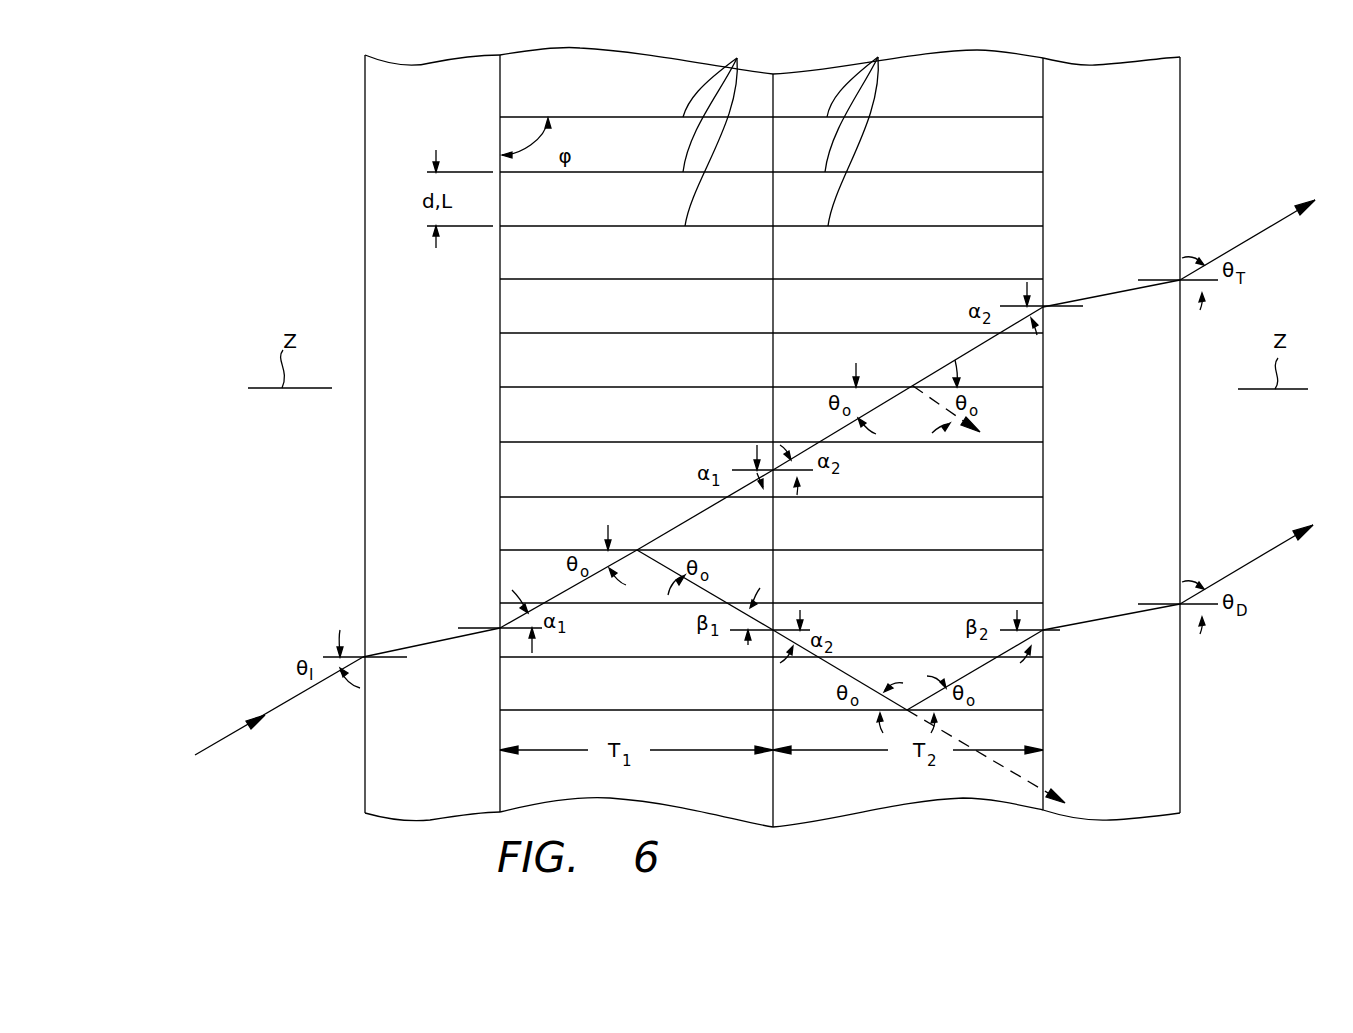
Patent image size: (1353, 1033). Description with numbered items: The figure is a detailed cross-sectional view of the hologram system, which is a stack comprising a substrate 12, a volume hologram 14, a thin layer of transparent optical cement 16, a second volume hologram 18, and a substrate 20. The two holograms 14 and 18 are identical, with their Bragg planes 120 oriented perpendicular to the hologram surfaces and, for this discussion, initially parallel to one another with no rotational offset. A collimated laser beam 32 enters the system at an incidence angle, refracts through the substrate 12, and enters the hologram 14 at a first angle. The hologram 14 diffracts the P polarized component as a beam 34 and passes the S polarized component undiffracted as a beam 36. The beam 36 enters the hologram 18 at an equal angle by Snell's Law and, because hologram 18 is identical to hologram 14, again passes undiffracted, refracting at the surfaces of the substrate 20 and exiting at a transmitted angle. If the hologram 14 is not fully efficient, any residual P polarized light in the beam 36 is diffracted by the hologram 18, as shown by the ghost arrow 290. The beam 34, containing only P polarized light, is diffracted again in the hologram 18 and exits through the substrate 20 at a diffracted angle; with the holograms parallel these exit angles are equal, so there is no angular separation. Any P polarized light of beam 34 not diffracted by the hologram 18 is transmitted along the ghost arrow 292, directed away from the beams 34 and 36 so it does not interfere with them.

The substrate 12 is at (397, 62).
The volume hologram 14 is at (615, 53).
The thin layer of transparent optical cement 16 is at (772, 70).
The volume hologram 18 is at (965, 50).
The substrate 20 is at (1097, 62).
The Bragg planes 120 is at (792, 127).
The laser beam 32 is at (222, 738).
The beam 34 is at (1262, 553).
The beam 36 is at (1263, 230).
The ghost arrow 290 is at (960, 435).
The ghost arrow 292 is at (1047, 795).